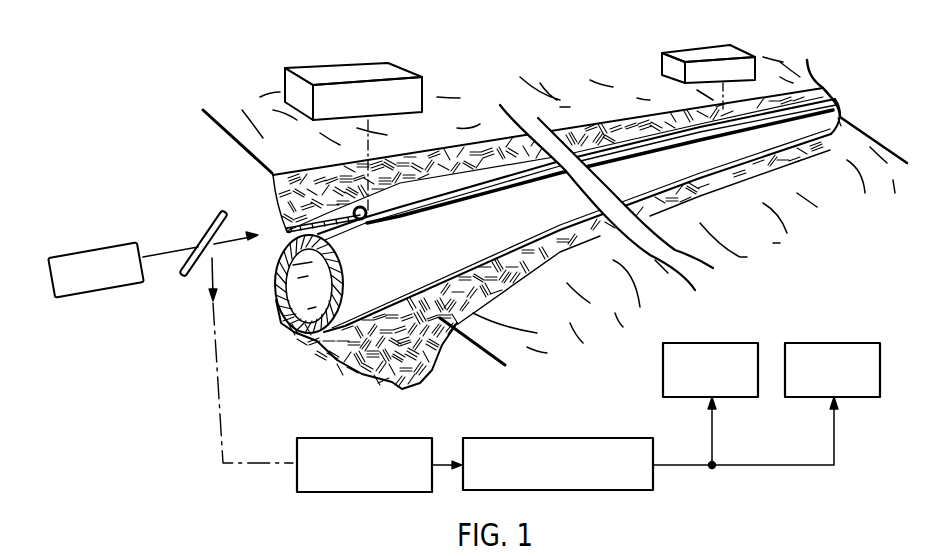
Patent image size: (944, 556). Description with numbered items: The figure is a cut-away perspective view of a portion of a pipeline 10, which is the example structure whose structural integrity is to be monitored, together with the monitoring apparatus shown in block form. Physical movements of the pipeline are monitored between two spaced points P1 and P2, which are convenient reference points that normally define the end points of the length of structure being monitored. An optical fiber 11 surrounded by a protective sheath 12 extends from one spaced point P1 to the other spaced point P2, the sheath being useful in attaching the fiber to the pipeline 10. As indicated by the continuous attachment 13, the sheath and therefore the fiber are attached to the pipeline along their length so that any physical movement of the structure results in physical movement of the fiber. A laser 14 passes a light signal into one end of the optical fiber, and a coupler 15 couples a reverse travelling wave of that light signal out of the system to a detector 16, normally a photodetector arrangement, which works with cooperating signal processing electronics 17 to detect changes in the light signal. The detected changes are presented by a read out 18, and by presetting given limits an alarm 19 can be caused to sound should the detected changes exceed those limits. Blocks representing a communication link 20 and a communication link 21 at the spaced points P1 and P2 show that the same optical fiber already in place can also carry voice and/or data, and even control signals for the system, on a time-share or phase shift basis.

The pipeline 10 is at (510, 249).
The optical fiber 11 is at (315, 205).
The protective sheath 12 is at (405, 200).
The continuous attachment 13 is at (417, 208).
The laser 14 is at (77, 302).
The coupler 15 is at (202, 228).
The detector 16 is at (345, 437).
The signal processing electronics 17 is at (538, 437).
The read out 18 is at (718, 342).
The alarm 19 is at (821, 342).
The communication link 20 is at (294, 90).
The communication link 21 is at (670, 68).
The first spaced point P1 is at (362, 222).
The second spaced point P2 is at (830, 134).